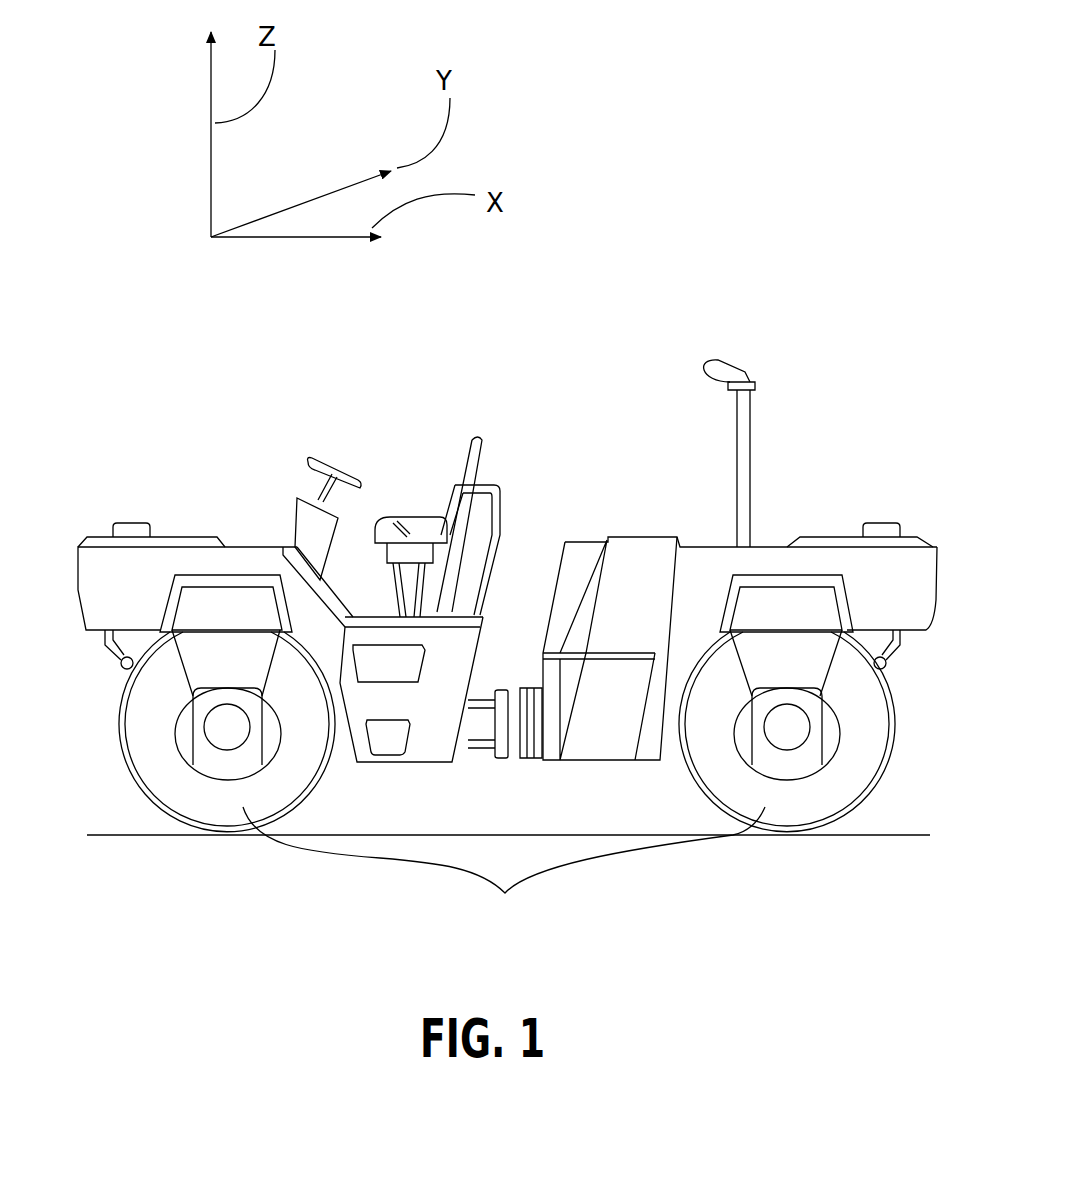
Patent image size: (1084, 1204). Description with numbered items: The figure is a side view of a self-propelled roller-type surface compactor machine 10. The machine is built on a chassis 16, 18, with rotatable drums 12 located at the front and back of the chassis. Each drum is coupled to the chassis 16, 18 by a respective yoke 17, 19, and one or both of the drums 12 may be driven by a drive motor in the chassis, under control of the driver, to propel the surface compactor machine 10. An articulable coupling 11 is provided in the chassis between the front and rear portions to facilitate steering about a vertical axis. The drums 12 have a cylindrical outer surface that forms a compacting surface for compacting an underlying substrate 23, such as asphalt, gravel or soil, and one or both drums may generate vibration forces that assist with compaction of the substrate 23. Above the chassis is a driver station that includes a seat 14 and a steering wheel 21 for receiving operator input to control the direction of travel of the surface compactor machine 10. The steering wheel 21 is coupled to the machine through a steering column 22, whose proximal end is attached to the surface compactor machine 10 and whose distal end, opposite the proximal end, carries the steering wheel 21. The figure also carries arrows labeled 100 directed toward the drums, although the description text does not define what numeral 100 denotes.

The surface compactor machine 10 is at (612, 315).
The articulable coupling 11 is at (508, 760).
The rotatable drums 12 is at (504, 870).
The seat 14 is at (457, 472).
The chassis 16 is at (165, 562).
The yoke 17 is at (207, 662).
The chassis 18 is at (830, 545).
The yoke 19 is at (805, 660).
The steering wheel 21 is at (309, 458).
The steering column 22 is at (305, 500).
The substrate 23 is at (825, 836).
The sensor system 100 is at (166, 721).